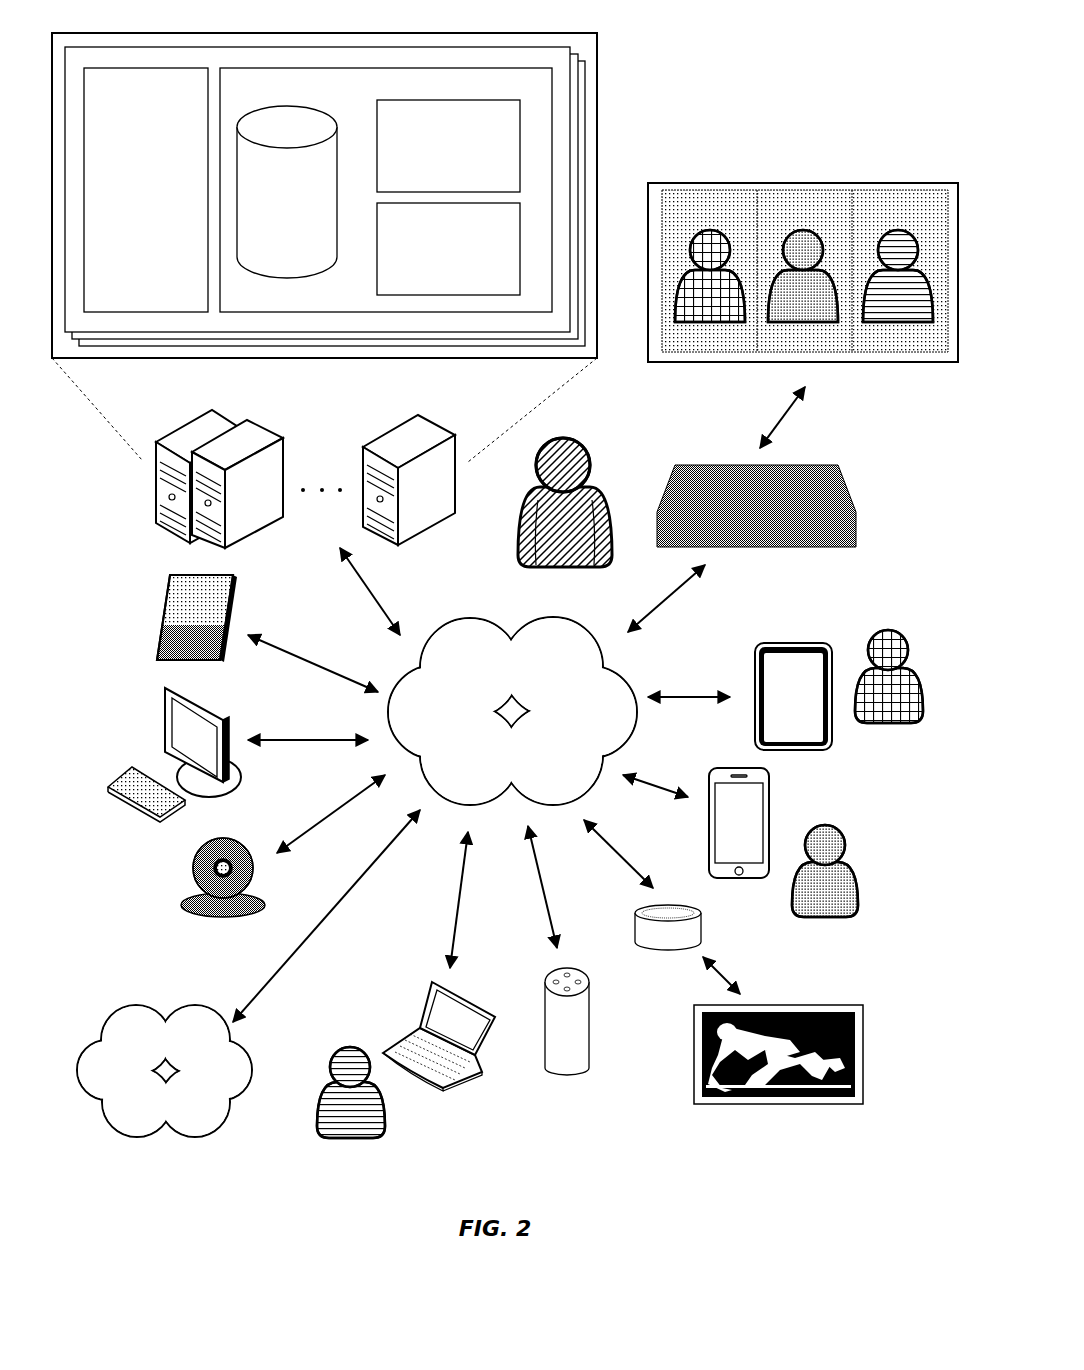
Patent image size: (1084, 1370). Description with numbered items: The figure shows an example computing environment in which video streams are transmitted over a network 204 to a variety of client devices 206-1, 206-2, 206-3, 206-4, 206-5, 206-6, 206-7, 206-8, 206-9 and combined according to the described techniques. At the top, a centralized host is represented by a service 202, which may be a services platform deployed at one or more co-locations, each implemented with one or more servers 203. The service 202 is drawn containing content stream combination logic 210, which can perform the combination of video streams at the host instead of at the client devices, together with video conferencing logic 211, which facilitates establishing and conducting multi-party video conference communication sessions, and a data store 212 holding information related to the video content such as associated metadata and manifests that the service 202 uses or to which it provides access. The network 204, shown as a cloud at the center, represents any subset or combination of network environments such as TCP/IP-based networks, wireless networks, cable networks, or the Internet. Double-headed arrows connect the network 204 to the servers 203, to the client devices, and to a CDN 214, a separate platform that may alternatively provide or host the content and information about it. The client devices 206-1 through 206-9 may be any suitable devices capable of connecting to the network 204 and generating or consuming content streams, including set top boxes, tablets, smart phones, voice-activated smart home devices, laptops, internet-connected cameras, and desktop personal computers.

The service 202 is at (510, 33).
The servers 203 is at (122, 45).
The network 204 is at (512, 711).
The content stream combination logic 210 is at (408, 100).
The video conferencing logic 211 is at (377, 283).
The data store 212 is at (298, 125).
The CDN 214 is at (164, 1071).
The client device 206-1 is at (820, 465).
The client device 206-2 is at (766, 643).
The client device 206-3 is at (735, 770).
The client device 206-4 is at (702, 936).
The client device 206-5 is at (566, 1073).
The client device 206-6 is at (440, 1093).
The client device 206-7 is at (192, 877).
The client device 206-8 is at (160, 716).
The client device 206-9 is at (160, 604).